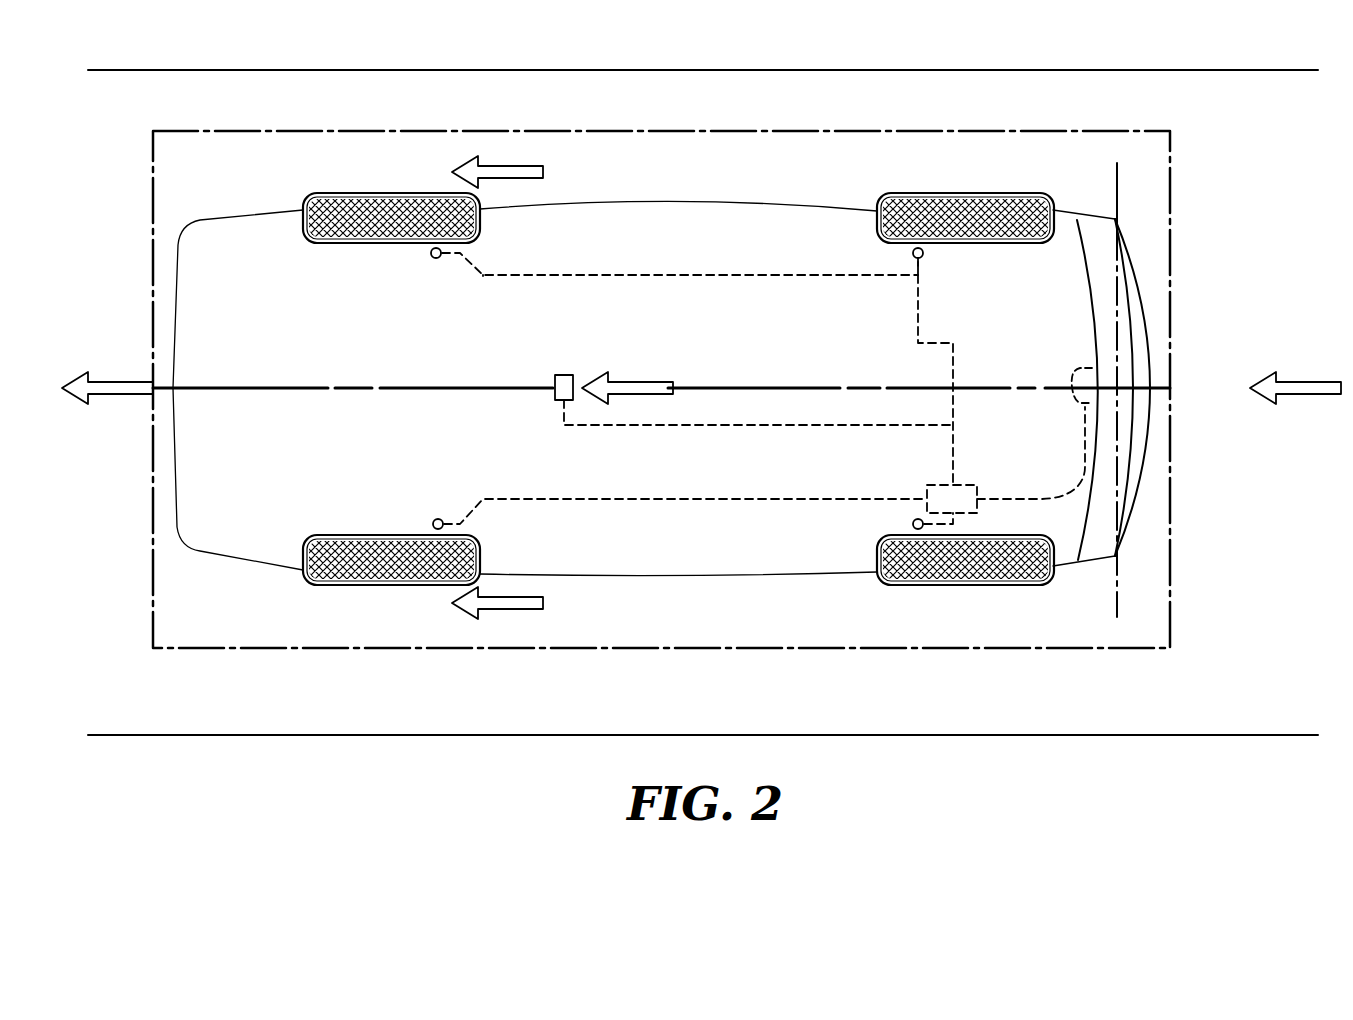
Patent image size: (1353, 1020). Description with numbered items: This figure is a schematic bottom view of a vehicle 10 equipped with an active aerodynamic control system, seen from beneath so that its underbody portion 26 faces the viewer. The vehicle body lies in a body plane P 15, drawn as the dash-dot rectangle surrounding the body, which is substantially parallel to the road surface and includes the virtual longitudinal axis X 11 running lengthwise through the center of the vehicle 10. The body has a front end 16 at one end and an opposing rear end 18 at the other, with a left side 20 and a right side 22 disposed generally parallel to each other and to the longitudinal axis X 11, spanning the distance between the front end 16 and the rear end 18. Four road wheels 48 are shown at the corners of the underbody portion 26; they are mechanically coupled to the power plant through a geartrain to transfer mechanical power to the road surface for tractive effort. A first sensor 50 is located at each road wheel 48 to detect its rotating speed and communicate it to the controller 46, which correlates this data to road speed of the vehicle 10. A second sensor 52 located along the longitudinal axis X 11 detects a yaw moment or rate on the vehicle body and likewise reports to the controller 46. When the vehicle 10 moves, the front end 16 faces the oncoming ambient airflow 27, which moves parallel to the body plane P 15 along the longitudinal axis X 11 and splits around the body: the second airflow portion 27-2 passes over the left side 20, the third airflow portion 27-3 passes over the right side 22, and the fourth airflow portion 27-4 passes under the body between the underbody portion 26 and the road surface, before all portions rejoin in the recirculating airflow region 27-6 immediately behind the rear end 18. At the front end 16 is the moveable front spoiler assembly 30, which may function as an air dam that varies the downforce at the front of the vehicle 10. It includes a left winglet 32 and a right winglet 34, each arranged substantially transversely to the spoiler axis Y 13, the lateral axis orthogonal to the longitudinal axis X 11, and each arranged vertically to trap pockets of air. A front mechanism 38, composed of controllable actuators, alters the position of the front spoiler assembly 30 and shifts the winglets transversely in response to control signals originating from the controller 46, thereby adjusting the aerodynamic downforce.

The vehicle 10 is at (1147, 547).
The longitudinal axis X 11 is at (1020, 384).
The spoiler axis Y 13 is at (1112, 185).
The body plane P 15 is at (345, 650).
The front end 16 is at (1150, 448).
The rear end 18 is at (174, 327).
The left side 20 is at (755, 576).
The right side 22 is at (680, 200).
The underbody portion 26 is at (867, 380).
The ambient airflow 27 is at (1293, 380).
The second airflow portion 27-2 is at (507, 612).
The third airflow portion 27-3 is at (510, 165).
The fourth airflow portion 27-4 is at (640, 373).
The recirculating airflow region 27-6 is at (120, 403).
The front spoiler assembly 30 is at (1135, 350).
The left winglet 32 is at (1115, 219).
The right winglet 34 is at (1100, 566).
The front mechanism 38 is at (1070, 403).
The controller 46 is at (977, 490).
The road wheels 48 is at (353, 193).
The first sensors 50 is at (431, 253).
The second sensor 52 is at (553, 392).